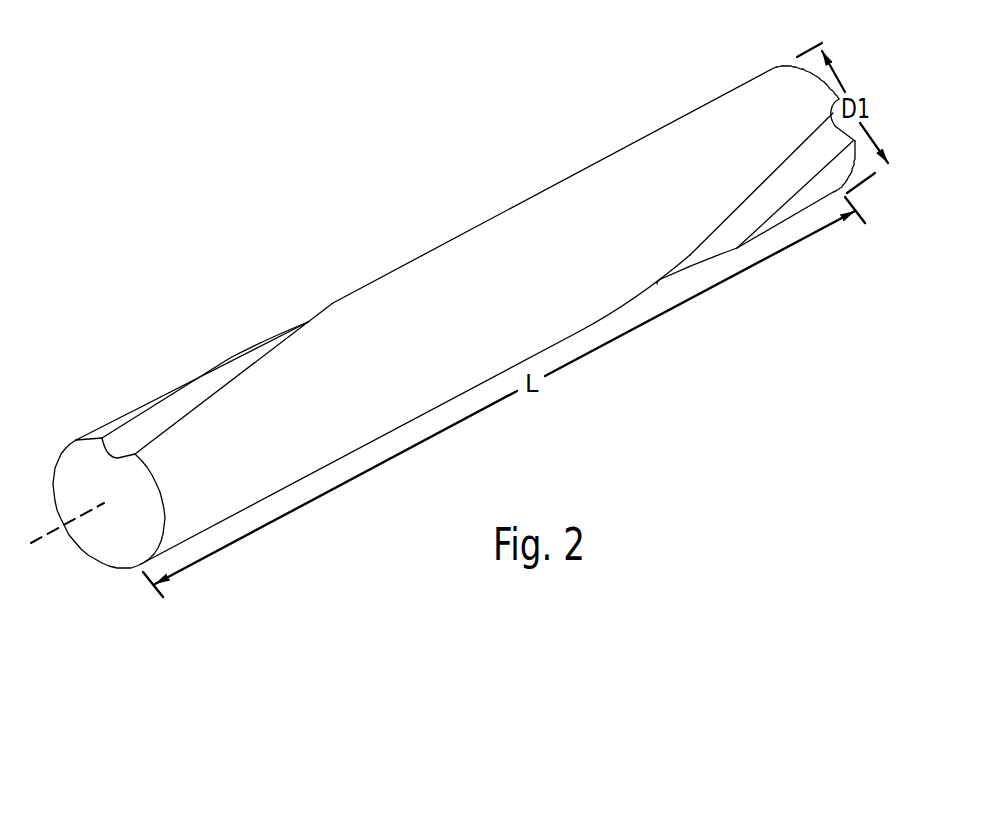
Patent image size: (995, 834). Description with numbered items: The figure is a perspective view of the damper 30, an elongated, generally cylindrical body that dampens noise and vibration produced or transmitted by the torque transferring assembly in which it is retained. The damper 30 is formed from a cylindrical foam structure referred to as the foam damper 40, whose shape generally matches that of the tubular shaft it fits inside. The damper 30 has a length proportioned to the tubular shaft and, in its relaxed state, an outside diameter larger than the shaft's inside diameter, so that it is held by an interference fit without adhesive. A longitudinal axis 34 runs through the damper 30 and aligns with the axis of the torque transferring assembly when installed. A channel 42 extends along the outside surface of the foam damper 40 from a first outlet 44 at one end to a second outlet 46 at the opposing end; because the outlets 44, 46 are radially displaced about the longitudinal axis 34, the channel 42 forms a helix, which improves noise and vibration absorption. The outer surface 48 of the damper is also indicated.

The damper 30 is at (350, 224).
The longitudinal axis 34 is at (56, 532).
The foam damper 40 is at (552, 340).
The channel 42 is at (710, 242).
The first outlet 44 is at (116, 455).
The second outlet 46 is at (833, 125).
The top surface 48 is at (620, 158).